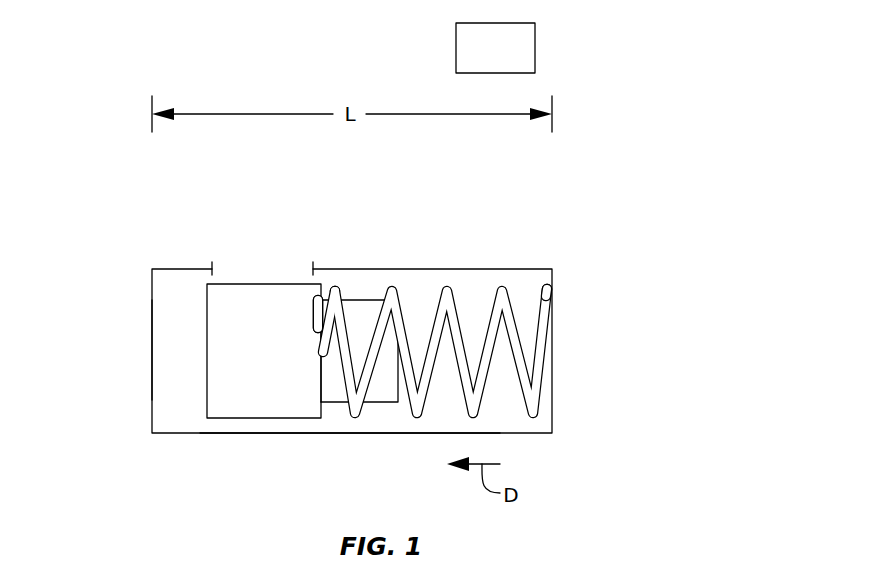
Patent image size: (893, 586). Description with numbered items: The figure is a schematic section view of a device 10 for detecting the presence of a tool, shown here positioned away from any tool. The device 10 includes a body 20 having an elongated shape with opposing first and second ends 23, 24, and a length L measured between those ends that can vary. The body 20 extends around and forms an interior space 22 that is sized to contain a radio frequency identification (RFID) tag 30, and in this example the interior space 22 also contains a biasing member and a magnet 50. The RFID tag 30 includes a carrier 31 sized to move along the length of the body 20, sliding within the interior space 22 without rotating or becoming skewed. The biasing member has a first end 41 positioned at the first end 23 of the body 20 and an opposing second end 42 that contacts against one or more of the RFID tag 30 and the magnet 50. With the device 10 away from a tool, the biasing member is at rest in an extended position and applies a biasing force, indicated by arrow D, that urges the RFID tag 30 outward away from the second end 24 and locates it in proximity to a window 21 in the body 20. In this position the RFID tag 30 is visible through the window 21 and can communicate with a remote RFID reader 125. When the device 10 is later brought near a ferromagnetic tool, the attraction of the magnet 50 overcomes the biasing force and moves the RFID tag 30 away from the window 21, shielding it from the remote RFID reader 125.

The device 10 is at (116, 205).
The body 20 is at (185, 268).
The window 21 is at (281, 210).
The interior space 22 is at (160, 357).
The first end 23 is at (152, 396).
The second end 24 is at (553, 312).
The radio frequency identification (RFID) tag 30 is at (255, 283).
The carrier 31 is at (267, 385).
The first end 41 is at (553, 285).
The second end 42 is at (324, 286).
The magnet 50 is at (352, 328).
The remote RFID reader 125 is at (513, 49).